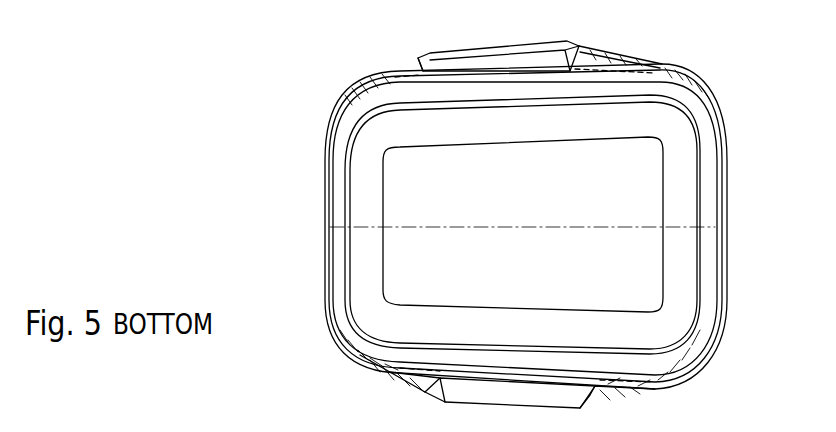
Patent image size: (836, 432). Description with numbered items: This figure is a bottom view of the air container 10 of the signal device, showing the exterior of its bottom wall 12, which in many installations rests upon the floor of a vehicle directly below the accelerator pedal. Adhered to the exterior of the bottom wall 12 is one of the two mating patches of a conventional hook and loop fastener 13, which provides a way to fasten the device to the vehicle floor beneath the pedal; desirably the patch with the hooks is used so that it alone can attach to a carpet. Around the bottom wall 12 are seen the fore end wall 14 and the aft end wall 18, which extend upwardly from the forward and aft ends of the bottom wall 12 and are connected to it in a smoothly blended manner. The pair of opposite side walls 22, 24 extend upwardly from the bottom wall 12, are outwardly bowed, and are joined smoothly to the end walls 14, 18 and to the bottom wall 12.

The air container 10 is at (252, 74).
The bottom wall 12 is at (388, 135).
The hook and loop fastener 13 is at (620, 178).
The fore end wall 14 is at (728, 211).
The aft end wall 18 is at (325, 200).
The side wall 22 is at (645, 392).
The side wall 24 is at (460, 52).